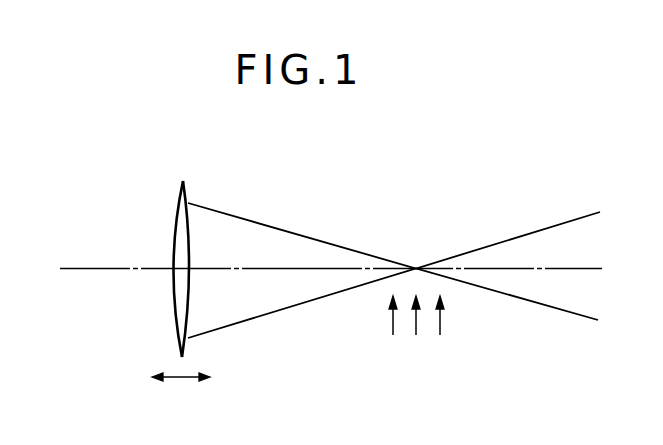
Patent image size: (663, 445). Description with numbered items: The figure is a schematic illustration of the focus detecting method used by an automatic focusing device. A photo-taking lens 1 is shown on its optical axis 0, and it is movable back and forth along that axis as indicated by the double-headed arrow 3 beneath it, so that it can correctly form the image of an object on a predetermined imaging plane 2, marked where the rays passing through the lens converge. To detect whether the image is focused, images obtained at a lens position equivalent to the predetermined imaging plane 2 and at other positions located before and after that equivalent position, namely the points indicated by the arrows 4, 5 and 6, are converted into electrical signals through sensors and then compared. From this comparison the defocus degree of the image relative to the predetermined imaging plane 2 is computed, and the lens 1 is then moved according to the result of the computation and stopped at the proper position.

The optical axis 0 is at (90, 271).
The photo-taking lens 1 is at (187, 181).
The predetermined imaging plane 2 is at (417, 259).
The lens movement direction 3 is at (179, 379).
The image detection position 4 is at (393, 335).
The image detection position 5 is at (416, 335).
The image detection position 6 is at (440, 335).